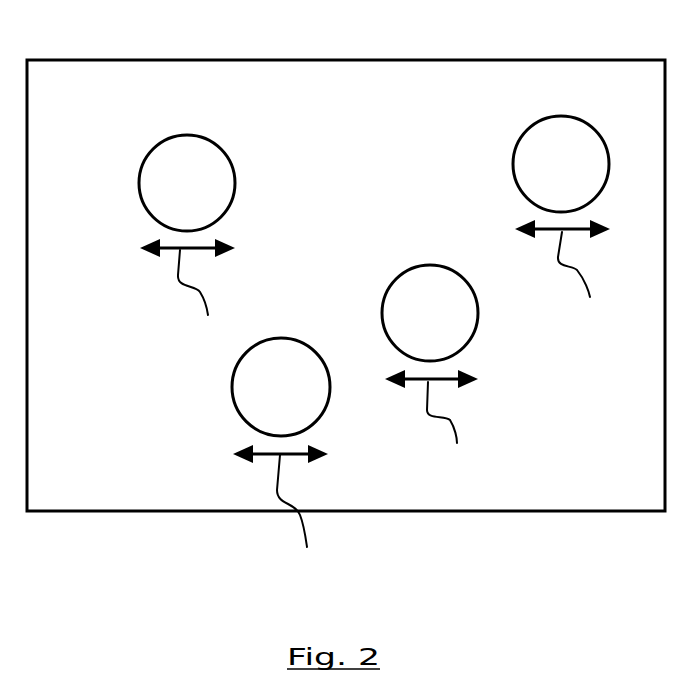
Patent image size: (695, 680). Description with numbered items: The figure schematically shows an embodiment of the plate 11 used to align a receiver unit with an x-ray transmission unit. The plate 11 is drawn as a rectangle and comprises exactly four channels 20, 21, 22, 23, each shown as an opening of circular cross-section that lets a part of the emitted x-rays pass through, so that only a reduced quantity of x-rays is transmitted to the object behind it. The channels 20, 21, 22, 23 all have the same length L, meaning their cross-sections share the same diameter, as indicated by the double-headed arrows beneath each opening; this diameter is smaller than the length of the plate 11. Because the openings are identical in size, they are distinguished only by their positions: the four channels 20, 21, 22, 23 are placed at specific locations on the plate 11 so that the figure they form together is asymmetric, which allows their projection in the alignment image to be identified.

The plate 11 is at (502, 512).
The channel 20 is at (567, 133).
The channel 21 is at (478, 305).
The channel 22 is at (257, 388).
The channel 23 is at (190, 168).